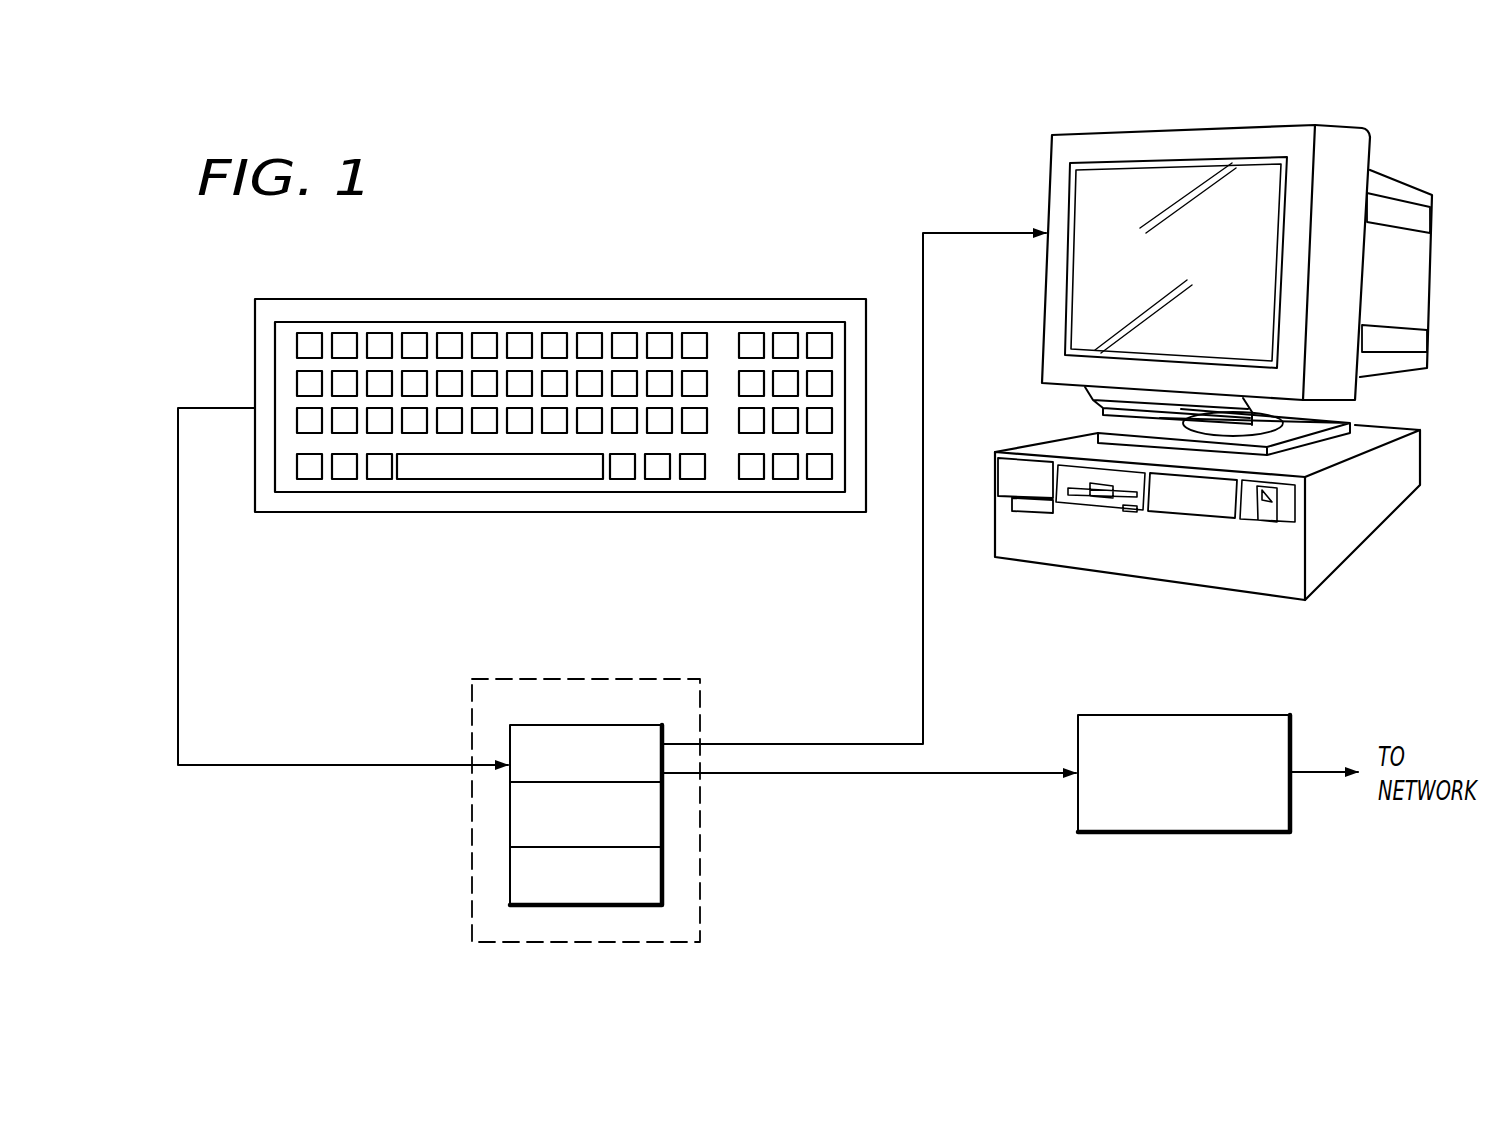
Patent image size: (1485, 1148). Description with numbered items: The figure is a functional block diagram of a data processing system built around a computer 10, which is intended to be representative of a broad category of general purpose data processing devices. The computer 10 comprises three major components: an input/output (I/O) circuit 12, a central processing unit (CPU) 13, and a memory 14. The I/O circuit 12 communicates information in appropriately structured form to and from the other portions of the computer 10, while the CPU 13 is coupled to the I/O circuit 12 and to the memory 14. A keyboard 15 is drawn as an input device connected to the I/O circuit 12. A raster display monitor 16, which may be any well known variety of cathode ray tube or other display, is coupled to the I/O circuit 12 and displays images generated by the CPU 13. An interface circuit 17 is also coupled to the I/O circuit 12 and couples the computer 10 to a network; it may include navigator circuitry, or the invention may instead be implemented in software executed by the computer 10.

The computer 10 is at (607, 679).
The input/output (I/O) circuit 12 is at (533, 725).
The central processing unit (CPU) 13 is at (664, 827).
The memory 14 is at (664, 888).
The keyboard 15 is at (597, 299).
The raster display monitor 16 is at (1048, 190).
The interface circuit 17 is at (1168, 715).